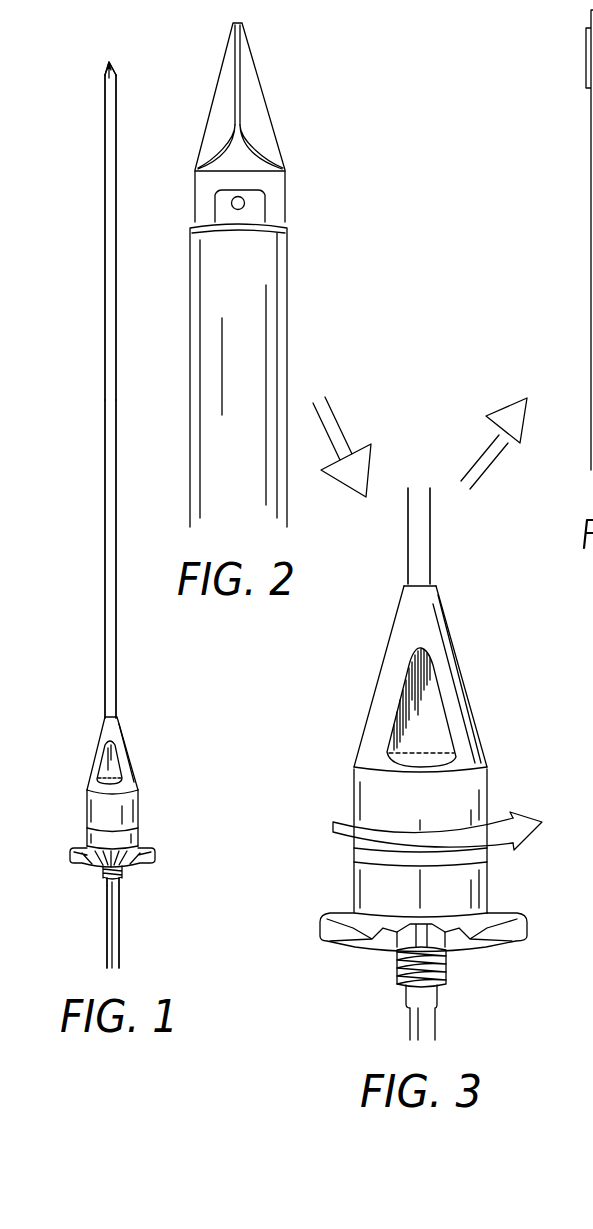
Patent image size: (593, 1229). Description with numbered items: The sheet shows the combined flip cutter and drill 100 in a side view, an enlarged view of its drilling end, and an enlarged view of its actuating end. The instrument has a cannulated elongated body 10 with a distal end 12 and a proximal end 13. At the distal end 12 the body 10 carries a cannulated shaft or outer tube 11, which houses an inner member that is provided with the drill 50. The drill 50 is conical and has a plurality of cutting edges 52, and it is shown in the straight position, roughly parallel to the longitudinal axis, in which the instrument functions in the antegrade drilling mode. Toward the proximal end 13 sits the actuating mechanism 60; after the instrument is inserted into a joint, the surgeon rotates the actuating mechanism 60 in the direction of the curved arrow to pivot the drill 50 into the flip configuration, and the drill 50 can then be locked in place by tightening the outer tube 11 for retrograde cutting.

In FIG. 1, the combined flip cutter and drill 100 is at (84, 110).
In FIG. 1, the cannulated elongated body 10 is at (86, 378).
In FIG. 1, the outer tube 11 is at (118, 455).
In FIG. 3, the outer tube 11 is at (430, 544).
In FIG. 1, the distal end 12 is at (117, 145).
In FIG. 2, the distal end 12 is at (290, 326).
In FIG. 1, the proximal end 13 is at (118, 895).
In FIG. 1, the drill 50 is at (113, 71).
In FIG. 2, the drill 50 is at (250, 40).
In FIG. 2, the cutting edges 52 is at (263, 157).
In FIG. 1, the actuating mechanism 60 is at (135, 762).
In FIG. 3, the actuating mechanism 60 is at (457, 706).